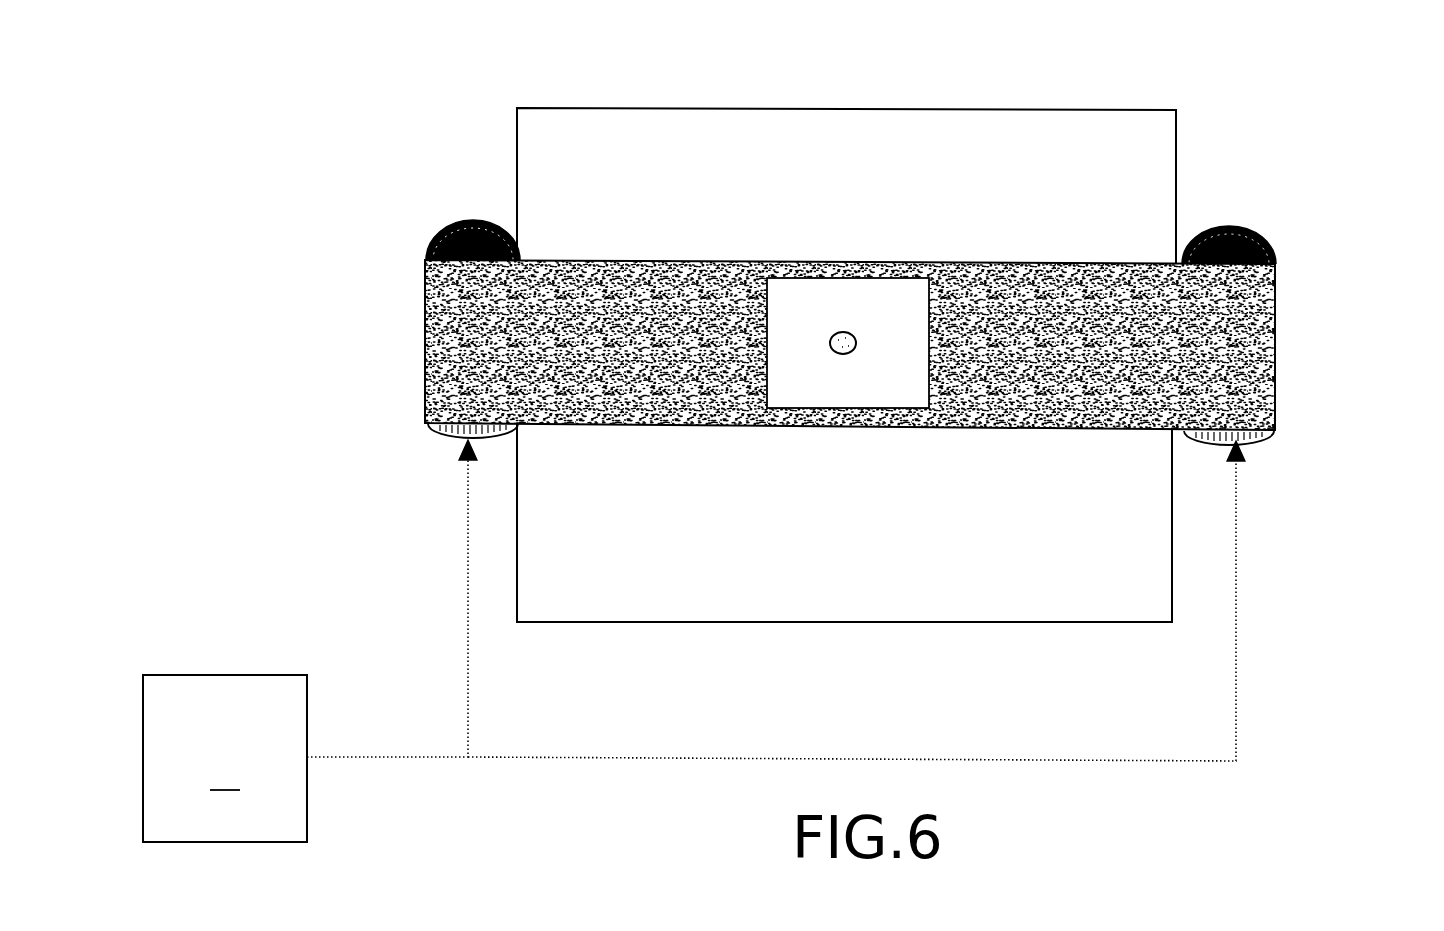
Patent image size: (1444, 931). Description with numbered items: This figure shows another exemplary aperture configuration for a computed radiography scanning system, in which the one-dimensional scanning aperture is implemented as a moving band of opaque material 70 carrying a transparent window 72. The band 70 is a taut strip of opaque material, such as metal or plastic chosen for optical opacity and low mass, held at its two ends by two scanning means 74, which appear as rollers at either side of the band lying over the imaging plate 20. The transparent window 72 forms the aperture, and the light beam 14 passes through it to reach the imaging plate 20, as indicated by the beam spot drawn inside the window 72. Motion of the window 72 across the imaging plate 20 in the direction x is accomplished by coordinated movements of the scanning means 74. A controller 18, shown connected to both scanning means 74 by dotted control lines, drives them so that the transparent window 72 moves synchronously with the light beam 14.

The light beam 14 is at (843, 340).
The controller 18 is at (694, 641).
The imaging plate 20 is at (1133, 175).
The moving band of opaque material 70 is at (1247, 367).
The transparent window 72 is at (865, 300).
The scanning means 74 is at (478, 255).